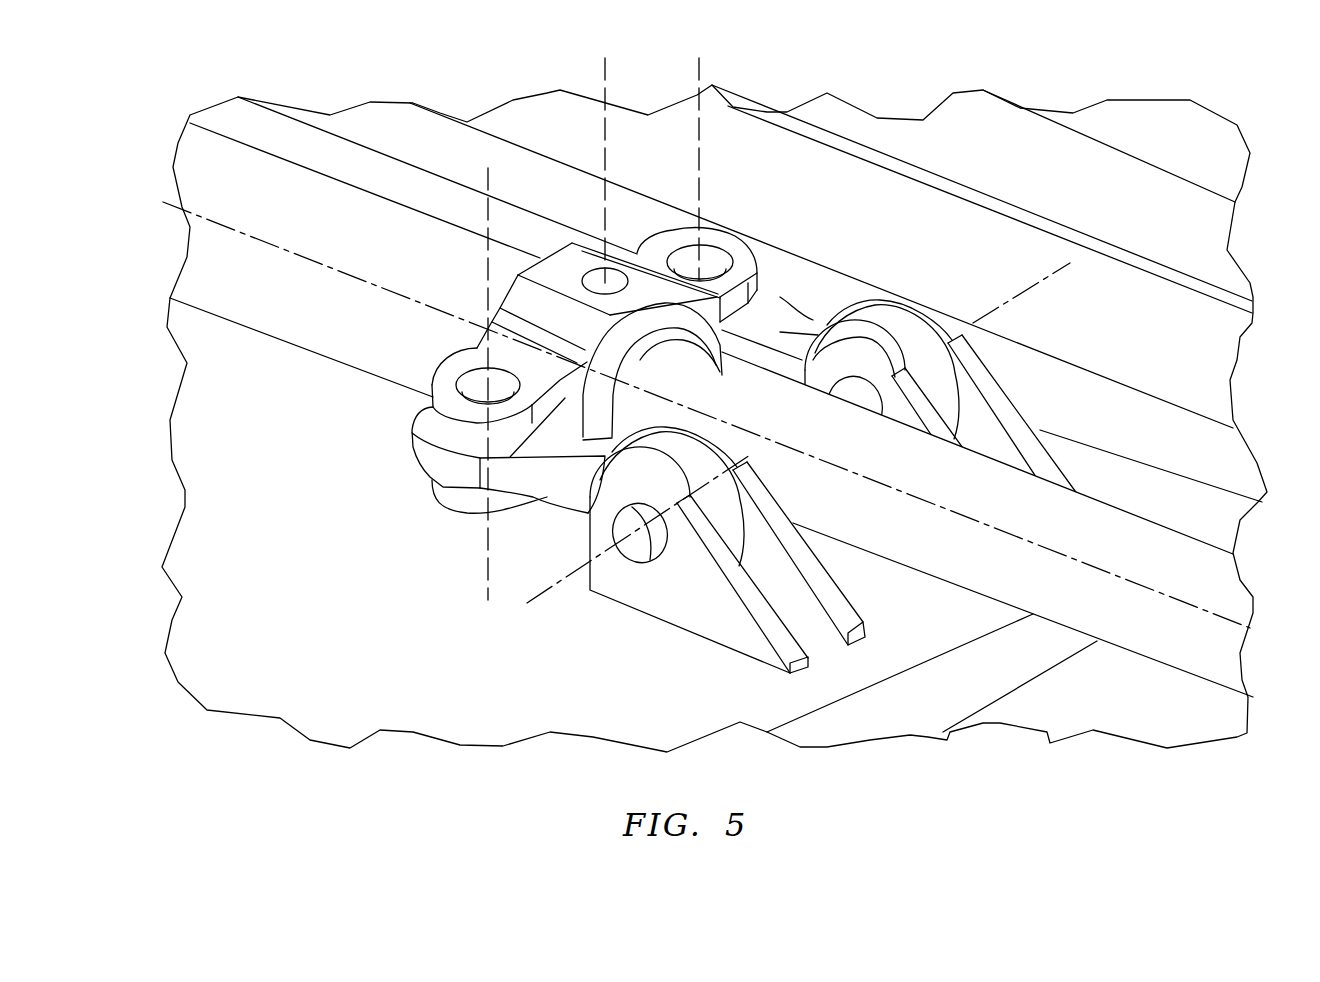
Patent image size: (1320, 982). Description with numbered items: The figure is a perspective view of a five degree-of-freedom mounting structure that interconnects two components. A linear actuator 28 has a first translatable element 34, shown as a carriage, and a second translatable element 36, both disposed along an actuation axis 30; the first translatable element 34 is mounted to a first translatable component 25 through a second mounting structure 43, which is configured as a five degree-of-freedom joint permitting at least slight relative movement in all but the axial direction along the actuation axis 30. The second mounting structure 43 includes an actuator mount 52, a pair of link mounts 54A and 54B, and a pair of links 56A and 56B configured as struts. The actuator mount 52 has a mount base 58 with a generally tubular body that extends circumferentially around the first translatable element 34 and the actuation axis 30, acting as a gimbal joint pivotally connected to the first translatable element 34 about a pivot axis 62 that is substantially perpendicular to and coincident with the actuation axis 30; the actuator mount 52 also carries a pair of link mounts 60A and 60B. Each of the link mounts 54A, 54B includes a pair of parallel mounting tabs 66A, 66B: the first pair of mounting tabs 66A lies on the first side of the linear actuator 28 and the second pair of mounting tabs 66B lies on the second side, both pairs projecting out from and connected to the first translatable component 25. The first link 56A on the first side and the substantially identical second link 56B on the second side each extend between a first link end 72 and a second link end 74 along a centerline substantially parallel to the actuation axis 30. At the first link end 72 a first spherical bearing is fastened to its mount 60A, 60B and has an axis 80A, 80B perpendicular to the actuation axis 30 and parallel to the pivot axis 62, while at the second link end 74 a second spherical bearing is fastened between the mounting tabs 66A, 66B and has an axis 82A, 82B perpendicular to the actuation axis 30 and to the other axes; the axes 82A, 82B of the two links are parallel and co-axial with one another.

The first translatable component 25 is at (413, 686).
The linear actuator 28 is at (187, 265).
The actuation axis 30 is at (1190, 607).
The first translatable element 34 is at (190, 160).
The second translatable element 36 is at (1223, 582).
The second mounting structure 43 is at (372, 504).
The actuator mount 52 is at (556, 238).
The first link mount 54A is at (678, 616).
The second link mount 54B is at (1018, 384).
The first link 56A is at (398, 436).
The second link 56B is at (810, 305).
The mount base 58 is at (541, 270).
The first link mount of actuator mount 60A is at (420, 387).
The second link mount of actuator mount 60B is at (750, 255).
The pivot axis 62 is at (605, 150).
The first pair of mounting tabs 66A is at (727, 628).
The second pair of mounting tabs 66B is at (880, 357).
The first link end 72 is at (452, 468).
The second link end 74 is at (737, 532).
The first spherical bearing axis of first link 80A is at (488, 217).
The first spherical bearing axis of second link 80B is at (700, 148).
The second spherical bearing axis of first link 82A is at (547, 600).
The second spherical bearing axis of second link 82B is at (1043, 280).